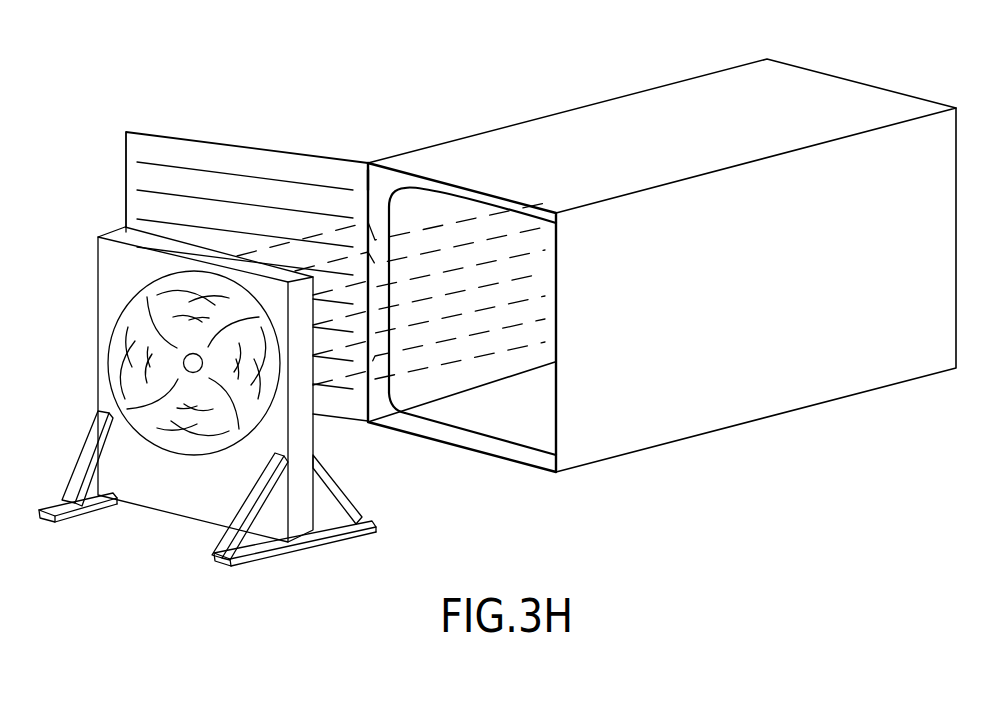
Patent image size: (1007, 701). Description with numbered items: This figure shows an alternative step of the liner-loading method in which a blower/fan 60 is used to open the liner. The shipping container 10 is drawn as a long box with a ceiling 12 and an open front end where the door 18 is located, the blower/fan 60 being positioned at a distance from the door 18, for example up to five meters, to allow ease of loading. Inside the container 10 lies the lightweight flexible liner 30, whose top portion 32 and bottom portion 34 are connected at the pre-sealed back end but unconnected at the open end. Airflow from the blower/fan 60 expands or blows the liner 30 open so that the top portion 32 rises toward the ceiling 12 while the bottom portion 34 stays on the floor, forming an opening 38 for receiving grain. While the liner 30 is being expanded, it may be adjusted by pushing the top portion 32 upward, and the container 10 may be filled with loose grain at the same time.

The shipping container 10 is at (853, 80).
The ceiling 12 is at (400, 177).
The door 18 is at (193, 157).
The flexible liner 30 is at (423, 202).
The top portion 32 is at (440, 185).
The bottom portion 34 is at (498, 448).
The opening 38 is at (492, 412).
The blower/fan 60 is at (182, 476).